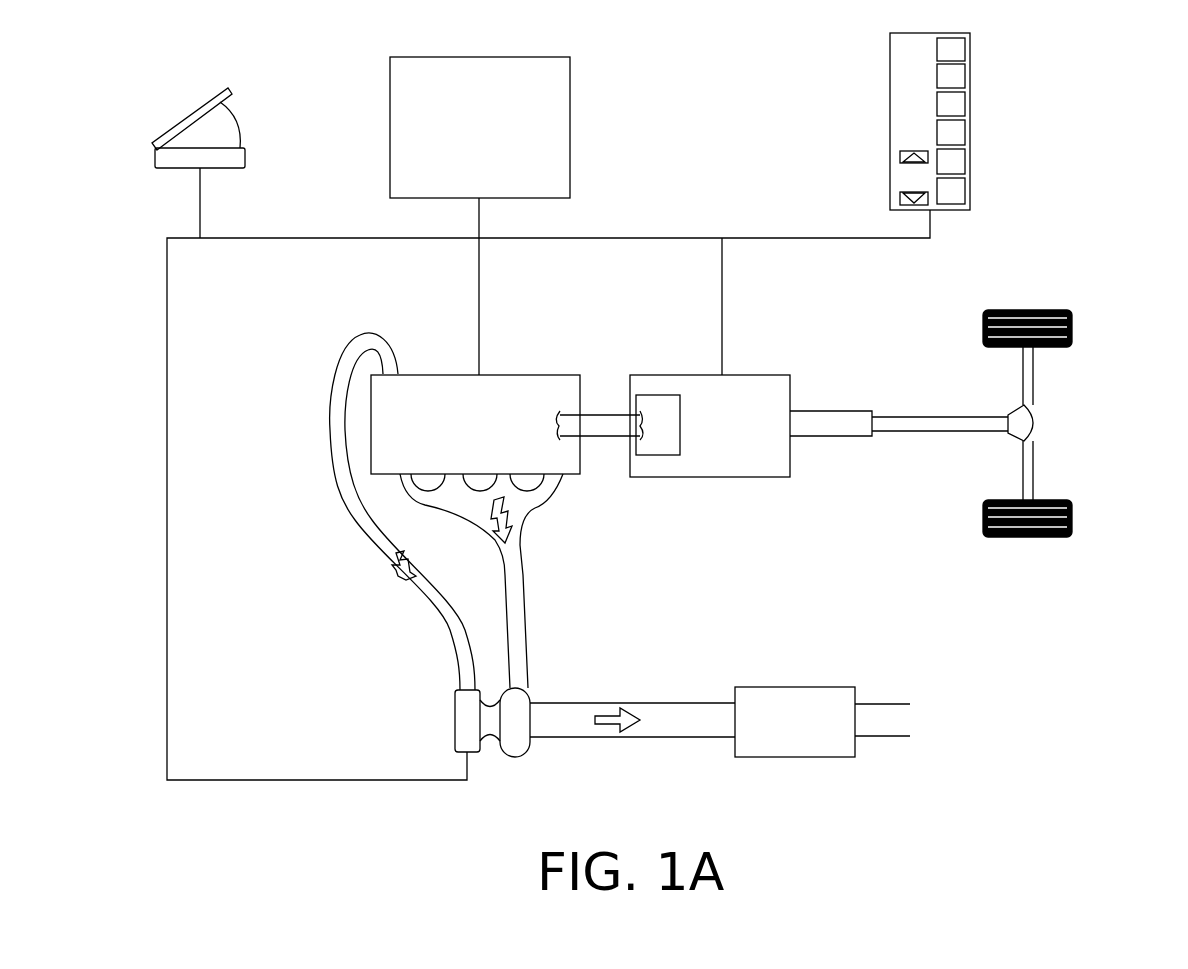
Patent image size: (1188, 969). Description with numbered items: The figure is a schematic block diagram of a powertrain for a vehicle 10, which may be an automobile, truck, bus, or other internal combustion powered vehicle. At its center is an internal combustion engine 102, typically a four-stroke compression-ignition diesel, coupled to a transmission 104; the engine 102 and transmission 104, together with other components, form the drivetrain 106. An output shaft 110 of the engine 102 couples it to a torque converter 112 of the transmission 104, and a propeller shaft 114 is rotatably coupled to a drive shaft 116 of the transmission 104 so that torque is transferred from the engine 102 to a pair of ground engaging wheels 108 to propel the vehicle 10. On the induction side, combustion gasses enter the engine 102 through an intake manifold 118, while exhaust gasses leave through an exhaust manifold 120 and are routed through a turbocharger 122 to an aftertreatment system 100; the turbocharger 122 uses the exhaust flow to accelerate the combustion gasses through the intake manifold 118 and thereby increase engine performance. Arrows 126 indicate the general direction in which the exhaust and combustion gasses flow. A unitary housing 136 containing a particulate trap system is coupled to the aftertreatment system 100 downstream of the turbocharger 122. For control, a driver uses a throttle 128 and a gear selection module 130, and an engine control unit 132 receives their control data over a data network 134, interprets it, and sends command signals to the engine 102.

The vehicle 10 is at (1105, 104).
The aftertreatment system 100 is at (642, 703).
The internal combustion engine 102 is at (475, 433).
The transmission 104 is at (710, 426).
The drivetrain 106 is at (760, 555).
The ground engaging wheels 108 is at (1058, 345).
The output shaft 110 is at (605, 412).
The torque converter 112 is at (634, 455).
The propeller shaft 114 is at (1040, 402).
The drive shaft 116 is at (985, 417).
The intake manifold 118 is at (397, 368).
The exhaust manifold 120 is at (533, 515).
The turbocharger 122 is at (532, 698).
The arrows 126 is at (605, 733).
The throttle 128 is at (248, 158).
The gear selection module 130 is at (970, 135).
The engine control unit 132 is at (480, 127).
The data network 134 is at (313, 238).
The unitary housing 136 is at (795, 722).